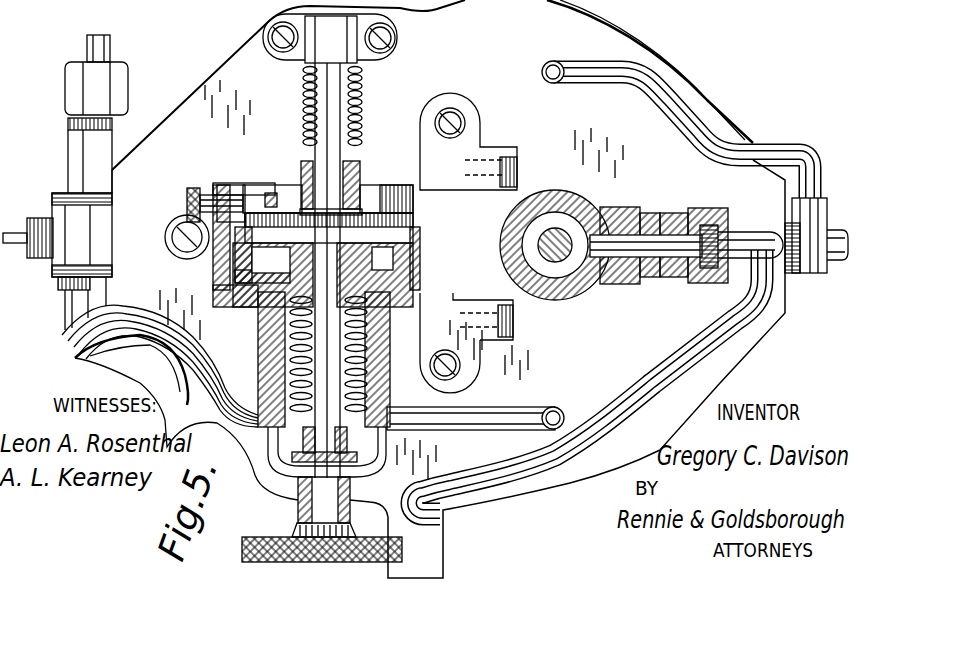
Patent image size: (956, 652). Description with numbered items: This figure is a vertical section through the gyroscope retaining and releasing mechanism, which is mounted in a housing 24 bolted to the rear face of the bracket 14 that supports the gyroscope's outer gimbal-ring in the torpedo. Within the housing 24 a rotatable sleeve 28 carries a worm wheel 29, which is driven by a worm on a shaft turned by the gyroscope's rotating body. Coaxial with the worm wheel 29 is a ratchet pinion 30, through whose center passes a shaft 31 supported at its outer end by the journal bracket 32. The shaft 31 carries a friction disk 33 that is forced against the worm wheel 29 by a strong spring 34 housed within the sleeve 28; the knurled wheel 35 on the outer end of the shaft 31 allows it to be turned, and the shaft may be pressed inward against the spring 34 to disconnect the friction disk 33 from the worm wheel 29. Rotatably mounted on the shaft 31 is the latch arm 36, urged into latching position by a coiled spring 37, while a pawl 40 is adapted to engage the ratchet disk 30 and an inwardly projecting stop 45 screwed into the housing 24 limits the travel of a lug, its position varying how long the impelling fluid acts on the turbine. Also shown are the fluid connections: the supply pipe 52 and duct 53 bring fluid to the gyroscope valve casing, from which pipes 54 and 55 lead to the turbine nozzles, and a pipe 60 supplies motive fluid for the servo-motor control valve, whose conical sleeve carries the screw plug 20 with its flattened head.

The bracket 14 is at (453, 289).
The screw plug 20 is at (34, 220).
The housing 24 is at (242, 195).
The rotatable sleeve 28 is at (265, 375).
The worm wheel 29 is at (217, 283).
The ratchet pinion 30 is at (297, 250).
The shaft 31 is at (320, 150).
The journal bracket 32 is at (330, 38).
The friction disk 33 is at (420, 178).
The spring 34 is at (368, 370).
The knurled wheel 35 is at (257, 537).
The latch arm 36 is at (363, 165).
The coiled spring 37 is at (344, 106).
The pawl 40 is at (513, 323).
The stop 45 is at (188, 192).
The supply pipe 52 is at (637, 400).
The duct 53 is at (660, 243).
The pipe 54 is at (588, 65).
The pipe 55 is at (470, 400).
The pipe 60 is at (92, 45).